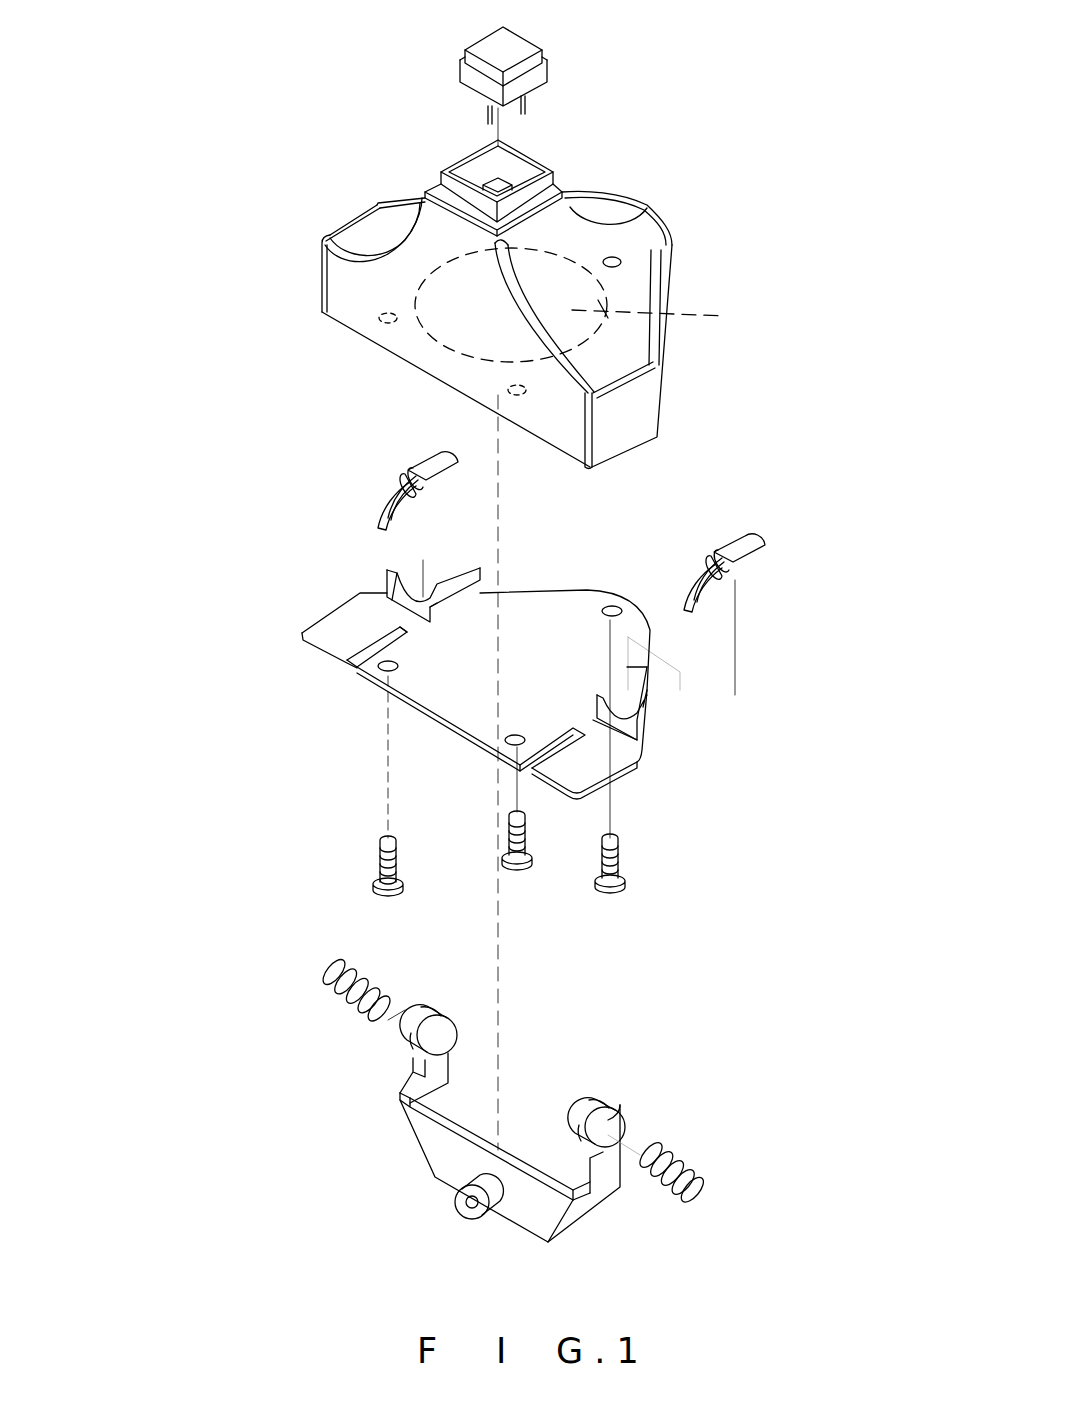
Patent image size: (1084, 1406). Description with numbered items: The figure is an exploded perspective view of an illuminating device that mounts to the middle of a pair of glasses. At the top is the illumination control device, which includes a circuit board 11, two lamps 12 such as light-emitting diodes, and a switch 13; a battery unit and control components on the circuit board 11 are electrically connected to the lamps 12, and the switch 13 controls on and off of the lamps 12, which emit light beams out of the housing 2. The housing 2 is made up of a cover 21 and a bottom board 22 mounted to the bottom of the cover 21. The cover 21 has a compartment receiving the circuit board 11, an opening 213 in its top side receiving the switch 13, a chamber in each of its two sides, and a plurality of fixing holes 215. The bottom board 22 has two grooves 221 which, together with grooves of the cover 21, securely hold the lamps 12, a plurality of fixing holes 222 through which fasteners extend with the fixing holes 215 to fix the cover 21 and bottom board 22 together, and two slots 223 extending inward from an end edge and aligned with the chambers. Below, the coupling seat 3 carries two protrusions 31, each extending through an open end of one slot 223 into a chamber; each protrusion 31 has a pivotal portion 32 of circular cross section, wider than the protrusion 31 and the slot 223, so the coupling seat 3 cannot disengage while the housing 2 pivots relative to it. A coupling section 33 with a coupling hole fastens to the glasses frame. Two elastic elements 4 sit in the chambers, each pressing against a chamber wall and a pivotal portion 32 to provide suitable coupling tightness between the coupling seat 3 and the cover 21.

The housing 2 is at (312, 577).
The coupling seat 3 is at (404, 1170).
The elastic element 4 is at (330, 1000).
The circuit board 11 is at (666, 320).
The lamp 12 is at (447, 468).
The switch 13 is at (515, 46).
The cover 21 is at (640, 240).
The bottom board 22 is at (608, 657).
The protrusion 31 is at (438, 1047).
The pivotal portion 32 is at (418, 1012).
The coupling section 33 is at (485, 1212).
The opening 213 is at (503, 185).
The fixing hole 215 is at (615, 258).
The groove 221 is at (428, 597).
The fixing hole 222 is at (515, 740).
The slot 223 is at (357, 657).